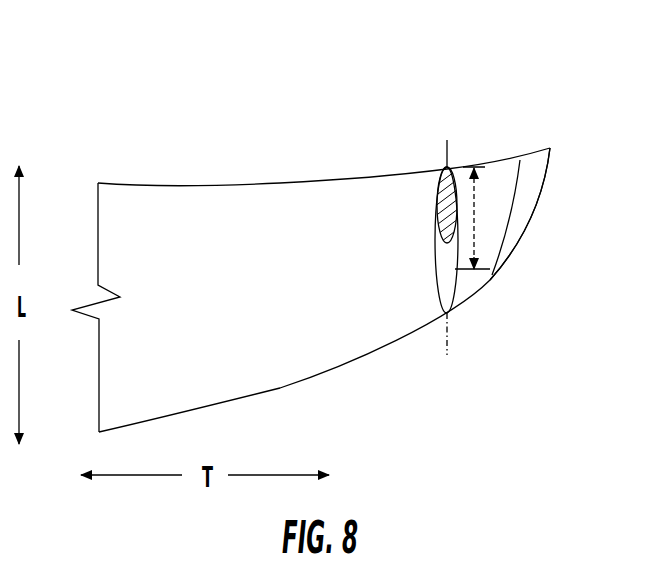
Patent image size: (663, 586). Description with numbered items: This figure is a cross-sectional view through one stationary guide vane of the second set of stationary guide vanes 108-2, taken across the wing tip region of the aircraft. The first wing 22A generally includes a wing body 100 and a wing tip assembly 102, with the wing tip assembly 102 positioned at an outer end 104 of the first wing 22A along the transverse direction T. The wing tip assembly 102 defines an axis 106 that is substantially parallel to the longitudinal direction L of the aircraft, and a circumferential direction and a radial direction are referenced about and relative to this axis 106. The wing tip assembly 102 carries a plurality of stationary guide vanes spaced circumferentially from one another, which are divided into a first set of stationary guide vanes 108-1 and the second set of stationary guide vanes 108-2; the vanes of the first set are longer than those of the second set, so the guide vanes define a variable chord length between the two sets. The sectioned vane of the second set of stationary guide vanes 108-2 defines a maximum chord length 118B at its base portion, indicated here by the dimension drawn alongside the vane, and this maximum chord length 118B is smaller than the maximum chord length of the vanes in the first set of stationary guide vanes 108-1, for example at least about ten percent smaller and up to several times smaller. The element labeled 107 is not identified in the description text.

The first wing 22A is at (318, 54).
The wing body 100 is at (316, 192).
The wing tip assembly 102 is at (490, 123).
The outer end 104 is at (434, 129).
The axis 106 is at (448, 343).
The metering section 107 is at (440, 288).
The first set of stationary guide vanes 108-1 is at (537, 181).
The second set of stationary guide vanes 108-2 is at (437, 210).
The maximum chord length 118B is at (476, 222).